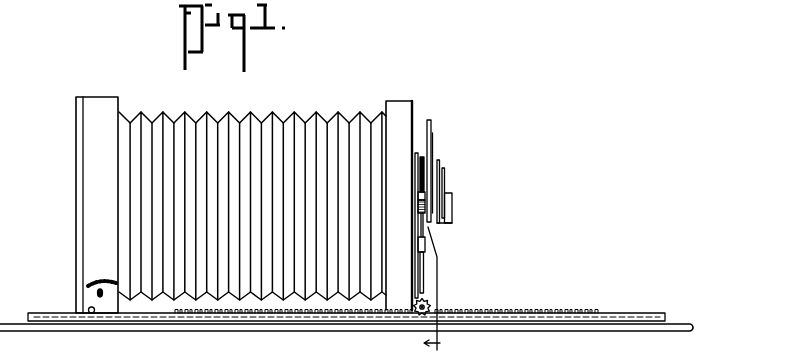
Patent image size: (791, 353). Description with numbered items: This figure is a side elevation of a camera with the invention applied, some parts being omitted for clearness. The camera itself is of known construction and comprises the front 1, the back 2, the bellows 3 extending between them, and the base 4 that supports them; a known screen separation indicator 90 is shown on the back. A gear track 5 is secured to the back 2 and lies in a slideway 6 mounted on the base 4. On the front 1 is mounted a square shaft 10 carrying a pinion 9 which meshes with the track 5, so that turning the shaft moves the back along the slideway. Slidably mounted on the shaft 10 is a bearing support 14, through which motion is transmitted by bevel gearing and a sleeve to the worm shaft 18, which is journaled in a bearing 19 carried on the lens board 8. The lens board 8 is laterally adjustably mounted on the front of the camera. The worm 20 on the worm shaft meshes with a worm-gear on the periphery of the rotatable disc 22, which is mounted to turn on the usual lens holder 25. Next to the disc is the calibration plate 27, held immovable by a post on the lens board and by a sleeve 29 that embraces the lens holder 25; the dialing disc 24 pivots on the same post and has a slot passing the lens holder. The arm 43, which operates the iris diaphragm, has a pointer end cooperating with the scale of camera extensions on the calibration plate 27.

The front of the camera 1 is at (402, 104).
The back of the camera 2 is at (97, 104).
The bellows 3 is at (230, 113).
The base 4 is at (141, 322).
The gear track 5 is at (540, 313).
The slideway 6 is at (50, 312).
The lens board 8 is at (413, 159).
The pinion 9 is at (429, 304).
The square shaft 10 is at (418, 312).
The bearing support 14 is at (423, 276).
The worm shaft 18 is at (422, 228).
The bearing 19 is at (418, 195).
The worm 20 is at (418, 208).
The rotatable disc 22 is at (433, 157).
The dialing disc 24 is at (448, 162).
The lens holder 25 is at (452, 205).
The calibration plate 27 is at (440, 163).
The sleeve 29 is at (437, 222).
The arm 43 is at (443, 181).
The screen separation indicator 90 is at (92, 284).